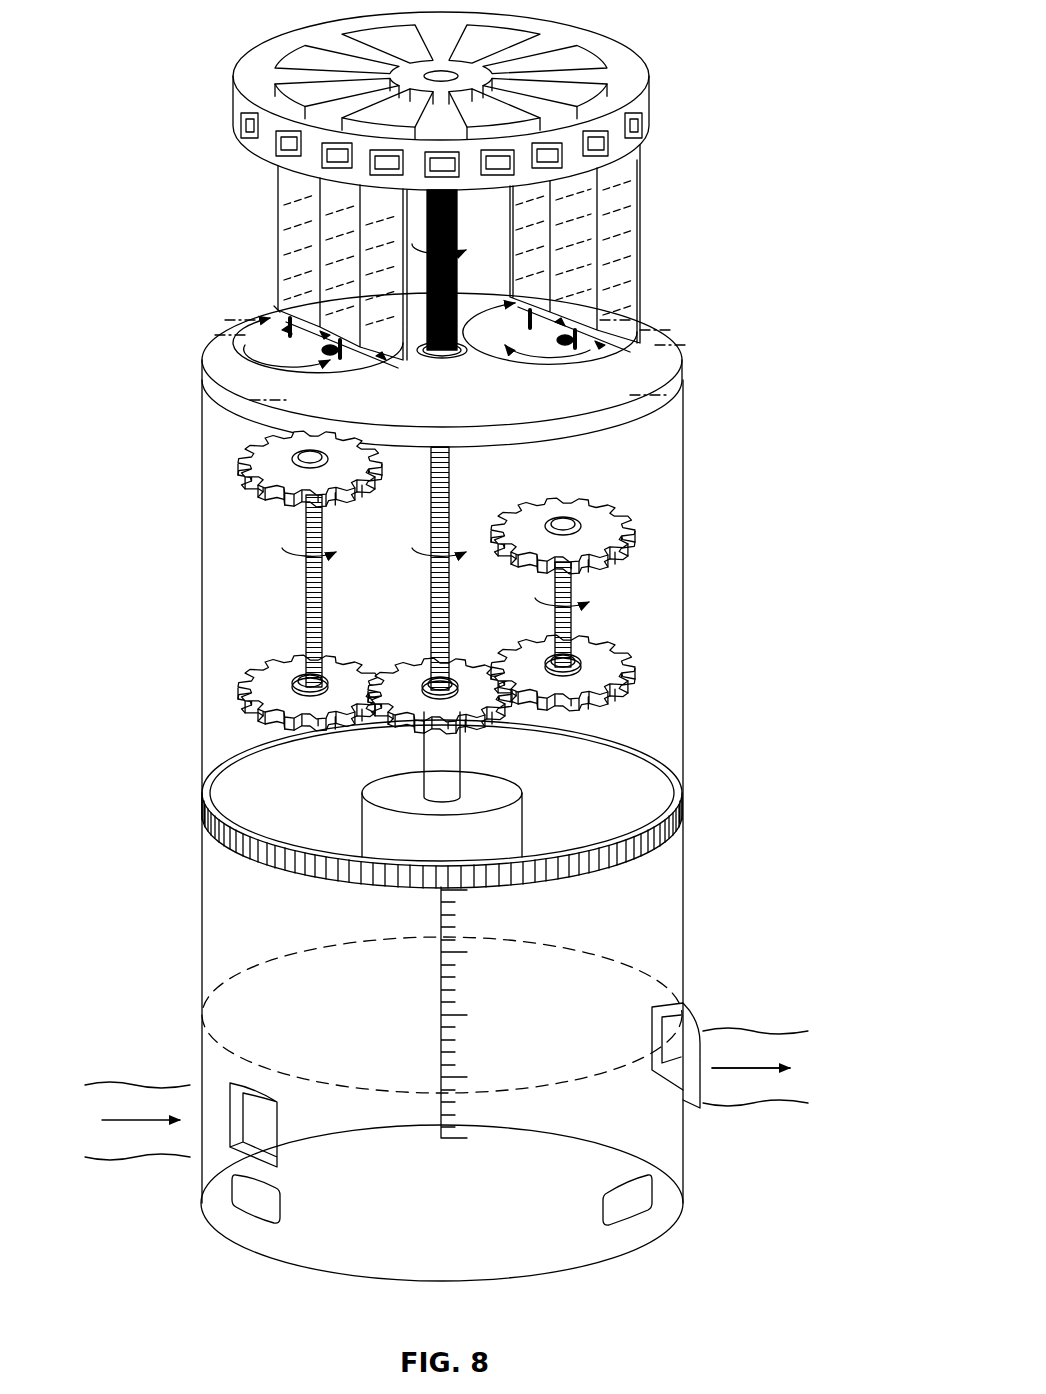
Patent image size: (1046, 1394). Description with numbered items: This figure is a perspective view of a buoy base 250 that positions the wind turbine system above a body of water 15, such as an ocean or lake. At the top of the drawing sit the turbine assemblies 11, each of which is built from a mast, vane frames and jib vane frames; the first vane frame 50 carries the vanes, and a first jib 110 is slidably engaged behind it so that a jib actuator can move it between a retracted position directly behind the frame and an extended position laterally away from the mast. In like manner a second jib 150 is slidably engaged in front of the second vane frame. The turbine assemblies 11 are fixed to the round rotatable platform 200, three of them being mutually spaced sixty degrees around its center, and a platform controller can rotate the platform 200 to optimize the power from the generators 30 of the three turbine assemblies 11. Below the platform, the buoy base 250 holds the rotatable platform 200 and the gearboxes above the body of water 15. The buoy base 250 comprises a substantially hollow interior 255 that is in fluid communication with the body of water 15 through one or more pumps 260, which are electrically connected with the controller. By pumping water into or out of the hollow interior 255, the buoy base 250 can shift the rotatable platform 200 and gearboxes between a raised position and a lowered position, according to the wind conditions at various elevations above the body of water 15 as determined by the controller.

The turbine assembly 11 is at (236, 234).
The body of water 15 is at (148, 1120).
The generator 30 is at (513, 795).
The first vane frame 50 is at (335, 208).
The first jib 110 is at (290, 285).
The second jib 150 is at (372, 262).
The round rotatable platform 200 is at (637, 407).
The buoy base 250 is at (683, 870).
The hollow interior 255 is at (247, 912).
The pump 260 is at (247, 1202).